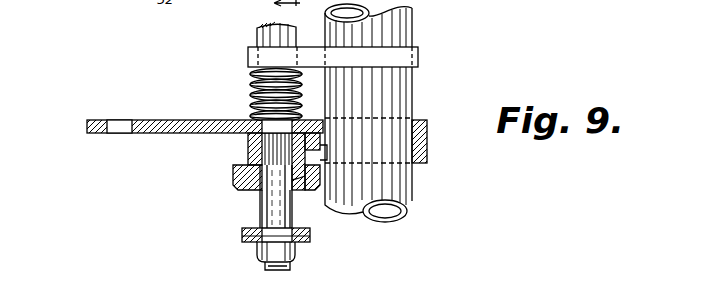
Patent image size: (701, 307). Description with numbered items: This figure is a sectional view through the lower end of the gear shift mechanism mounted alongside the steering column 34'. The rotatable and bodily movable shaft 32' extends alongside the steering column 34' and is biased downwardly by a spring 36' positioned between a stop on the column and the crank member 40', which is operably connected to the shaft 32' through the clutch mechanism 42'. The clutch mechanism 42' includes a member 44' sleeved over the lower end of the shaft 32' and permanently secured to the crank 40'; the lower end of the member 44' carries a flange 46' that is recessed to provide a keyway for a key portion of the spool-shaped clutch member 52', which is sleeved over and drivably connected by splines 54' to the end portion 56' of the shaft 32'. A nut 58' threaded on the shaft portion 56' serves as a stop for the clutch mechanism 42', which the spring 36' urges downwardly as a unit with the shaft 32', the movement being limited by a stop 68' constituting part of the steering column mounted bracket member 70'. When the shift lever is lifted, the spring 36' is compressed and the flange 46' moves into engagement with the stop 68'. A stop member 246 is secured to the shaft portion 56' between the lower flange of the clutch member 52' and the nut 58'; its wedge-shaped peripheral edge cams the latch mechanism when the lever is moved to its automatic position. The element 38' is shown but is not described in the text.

The shaft 32' is at (258, 34).
The steering column 34' is at (388, 113).
The spring 36' is at (258, 95).
The cross bar 38' is at (347, 45).
The crank member 40' is at (205, 117).
The clutch mechanism 42' is at (263, 171).
The member 44' is at (263, 161).
The flange 46' is at (231, 177).
The clutch member 52' is at (254, 180).
The splines 54' is at (257, 117).
The end portion of the shaft 56' is at (283, 245).
The nut 58' is at (266, 260).
The stop 68' is at (307, 197).
The bracket member 70' is at (438, 139).
The stop member 246 is at (251, 241).